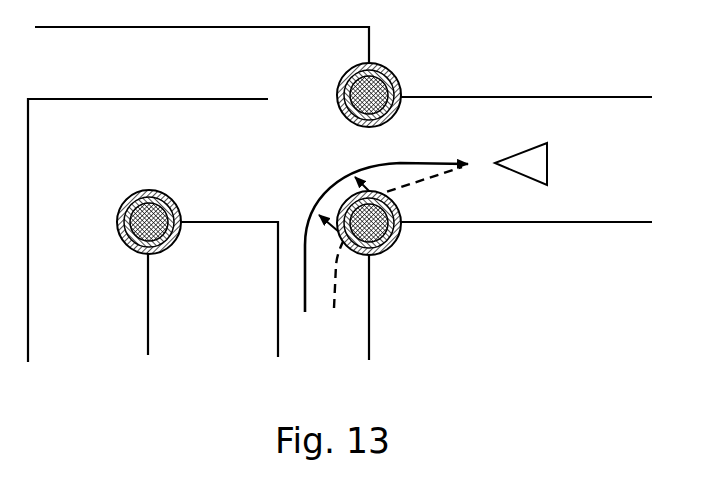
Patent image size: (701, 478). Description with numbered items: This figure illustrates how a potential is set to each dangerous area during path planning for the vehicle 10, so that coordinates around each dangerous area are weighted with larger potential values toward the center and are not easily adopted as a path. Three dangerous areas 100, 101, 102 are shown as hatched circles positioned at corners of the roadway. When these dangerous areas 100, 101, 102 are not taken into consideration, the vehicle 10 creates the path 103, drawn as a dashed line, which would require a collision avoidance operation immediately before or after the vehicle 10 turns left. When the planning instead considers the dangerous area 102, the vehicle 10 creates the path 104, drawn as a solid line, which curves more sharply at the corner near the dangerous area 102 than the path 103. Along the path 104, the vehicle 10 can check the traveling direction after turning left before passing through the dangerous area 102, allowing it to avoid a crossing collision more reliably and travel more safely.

The vehicle 10 is at (547, 160).
The dangerous area 100 is at (392, 72).
The dangerous area 101 is at (168, 252).
The dangerous area 102 is at (393, 247).
The path 103 is at (418, 178).
The path 104 is at (318, 197).